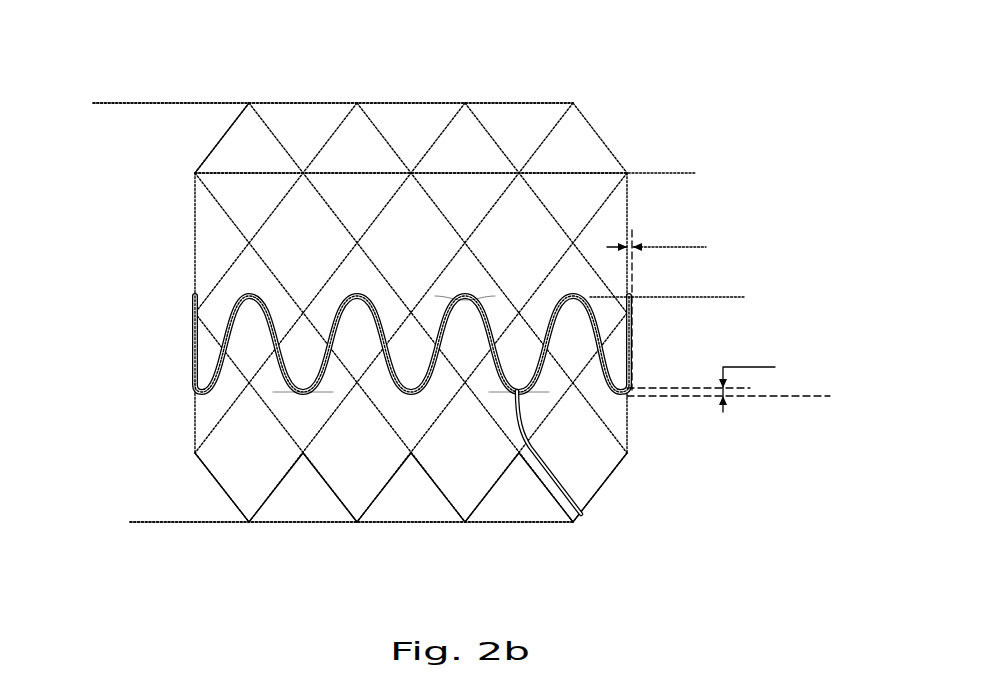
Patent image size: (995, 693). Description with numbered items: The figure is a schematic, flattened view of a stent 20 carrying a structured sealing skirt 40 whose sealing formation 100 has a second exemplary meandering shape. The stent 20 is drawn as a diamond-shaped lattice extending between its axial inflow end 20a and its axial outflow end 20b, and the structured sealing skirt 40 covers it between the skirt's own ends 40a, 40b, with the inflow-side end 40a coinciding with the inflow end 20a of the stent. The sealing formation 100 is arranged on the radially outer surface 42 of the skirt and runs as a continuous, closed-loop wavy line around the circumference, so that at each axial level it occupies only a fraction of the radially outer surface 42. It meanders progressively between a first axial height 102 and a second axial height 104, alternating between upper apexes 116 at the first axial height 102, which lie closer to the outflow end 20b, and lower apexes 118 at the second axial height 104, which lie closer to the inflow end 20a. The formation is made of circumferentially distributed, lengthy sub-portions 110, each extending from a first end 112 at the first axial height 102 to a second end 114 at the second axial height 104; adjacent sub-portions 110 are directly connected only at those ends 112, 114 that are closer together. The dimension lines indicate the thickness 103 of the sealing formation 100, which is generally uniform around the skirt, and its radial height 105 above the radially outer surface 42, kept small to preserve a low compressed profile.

The stent 20 is at (523, 82).
The axial inflow end 20a is at (300, 521).
The axial outflow end 20b is at (307, 101).
The structured sealing skirt 40 is at (195, 240).
The axial inflow end of the structured sealing skirt 40a is at (411, 487).
The axial outflow end of the structured sealing skirt 40b is at (470, 171).
The radially outer surface 42 is at (191, 186).
The sealing formation 100 is at (348, 303).
The first axial height 102 is at (692, 294).
The thickness 103 is at (701, 375).
The second axial height 104 is at (751, 394).
The height 105 is at (681, 310).
The sub-portions 110 is at (327, 390).
The first end 112 is at (193, 297).
The second end 114 is at (193, 397).
The upper apex 116 is at (466, 297).
The lower apex 118 is at (582, 517).